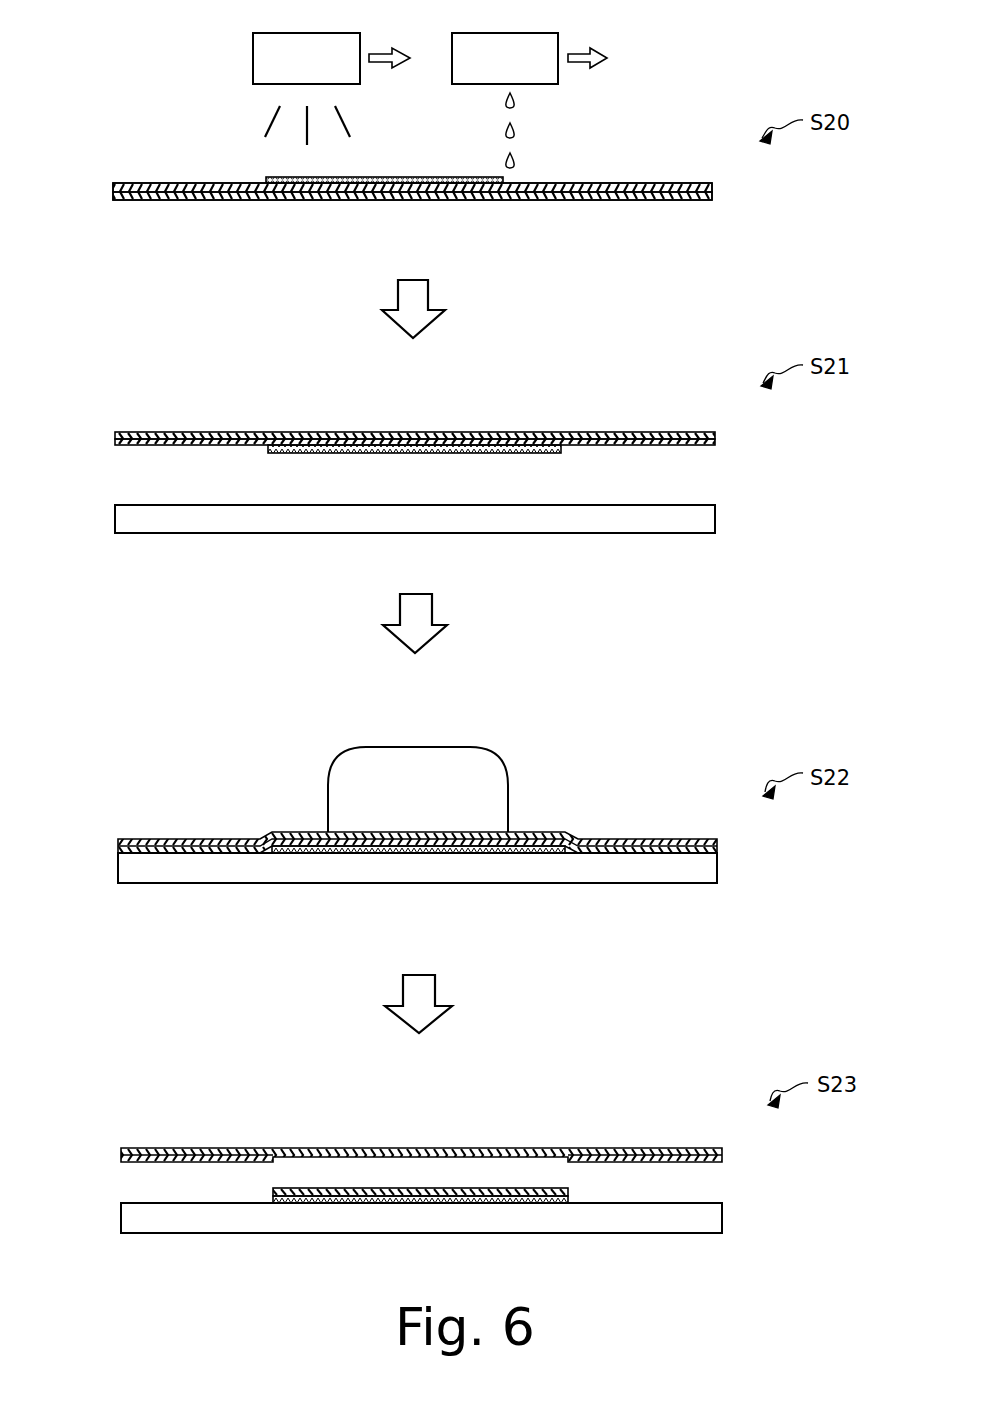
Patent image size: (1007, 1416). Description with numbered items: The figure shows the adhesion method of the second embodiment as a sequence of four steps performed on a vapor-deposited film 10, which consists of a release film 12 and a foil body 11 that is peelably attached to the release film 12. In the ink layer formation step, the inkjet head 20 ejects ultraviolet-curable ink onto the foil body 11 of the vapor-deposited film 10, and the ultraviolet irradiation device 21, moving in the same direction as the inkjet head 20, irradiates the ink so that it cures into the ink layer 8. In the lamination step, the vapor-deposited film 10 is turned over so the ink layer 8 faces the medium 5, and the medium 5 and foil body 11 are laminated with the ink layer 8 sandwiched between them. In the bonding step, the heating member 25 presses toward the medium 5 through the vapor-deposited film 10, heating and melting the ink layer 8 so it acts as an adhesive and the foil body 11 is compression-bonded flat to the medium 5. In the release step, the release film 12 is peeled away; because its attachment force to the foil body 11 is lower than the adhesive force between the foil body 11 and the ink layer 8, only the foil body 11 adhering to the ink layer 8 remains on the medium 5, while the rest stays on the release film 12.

The ultraviolet irradiation device 21 is at (310, 33).
The inkjet head 20 is at (505, 33).
The ink layer 8 is at (266, 179).
The foil body 11 is at (113, 188).
The release film 12 is at (113, 197).
The vapor-deposited film 10 is at (718, 178).
The medium 5 is at (716, 518).
The heating member 25 is at (510, 787).